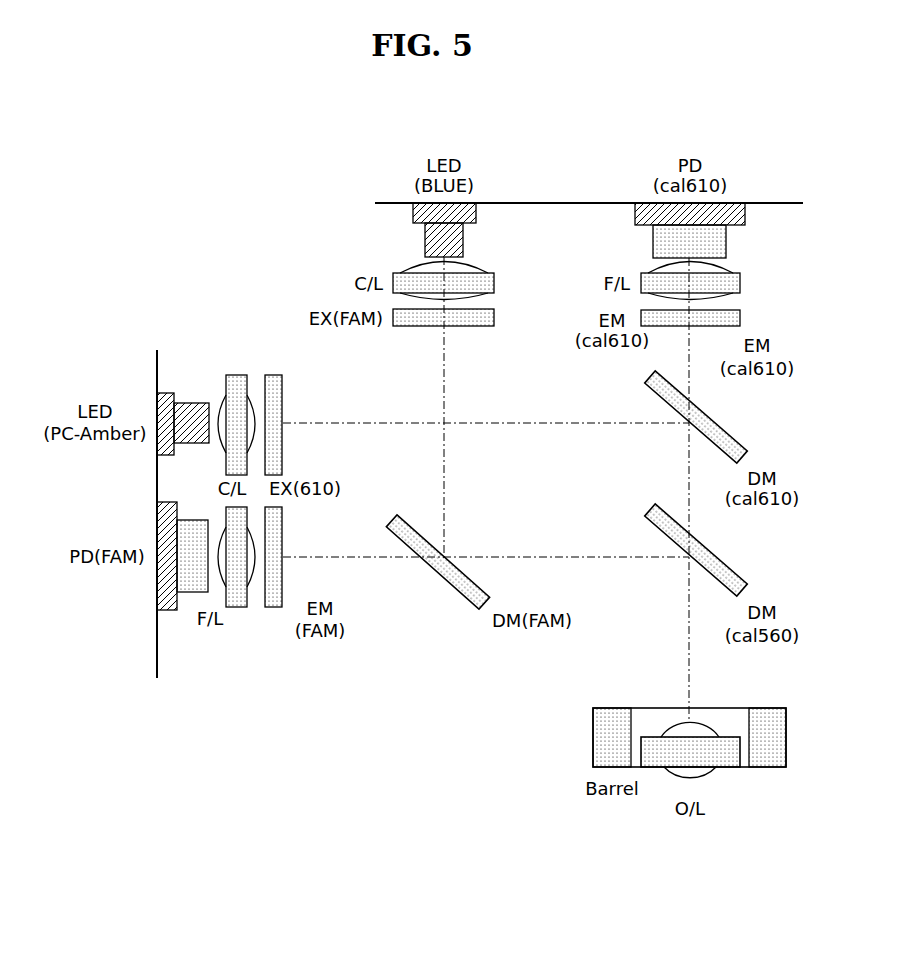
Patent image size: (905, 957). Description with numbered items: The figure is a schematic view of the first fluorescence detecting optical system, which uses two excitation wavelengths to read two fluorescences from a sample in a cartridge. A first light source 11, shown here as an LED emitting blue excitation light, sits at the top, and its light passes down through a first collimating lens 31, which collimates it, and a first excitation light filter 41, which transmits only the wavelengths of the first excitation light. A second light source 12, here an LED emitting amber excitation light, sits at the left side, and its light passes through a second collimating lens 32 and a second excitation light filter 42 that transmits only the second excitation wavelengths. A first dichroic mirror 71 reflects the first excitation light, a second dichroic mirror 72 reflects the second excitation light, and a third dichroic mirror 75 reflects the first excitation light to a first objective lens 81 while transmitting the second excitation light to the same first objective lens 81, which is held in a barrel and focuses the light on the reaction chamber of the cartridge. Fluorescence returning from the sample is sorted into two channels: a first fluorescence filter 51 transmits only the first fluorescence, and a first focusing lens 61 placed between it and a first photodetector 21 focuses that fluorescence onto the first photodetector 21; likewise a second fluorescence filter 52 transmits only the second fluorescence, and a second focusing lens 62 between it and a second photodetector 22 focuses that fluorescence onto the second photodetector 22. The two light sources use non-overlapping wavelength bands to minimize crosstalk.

The first light source 11 is at (476, 215).
The second light source 12 is at (172, 393).
The first photodetector 21 is at (170, 612).
The second photodetector 22 is at (745, 218).
The first collimating lens 31 is at (494, 283).
The second collimating lens 32 is at (237, 373).
The first excitation light filter 41 is at (494, 318).
The second excitation light filter 42 is at (273, 373).
The first fluorescence filter 51 is at (273, 609).
The second fluorescence filter 52 is at (740, 318).
The first focusing lens 61 is at (237, 609).
The second focusing lens 62 is at (740, 283).
The first dichroic mirror 71 is at (452, 592).
The second dichroic mirror 72 is at (725, 428).
The third dichroic mirror 75 is at (725, 562).
The first objective lens 81 is at (593, 738).